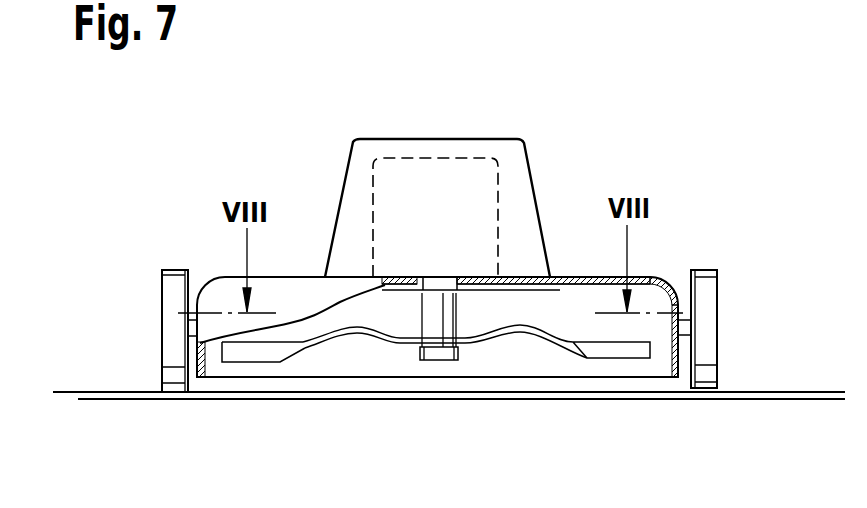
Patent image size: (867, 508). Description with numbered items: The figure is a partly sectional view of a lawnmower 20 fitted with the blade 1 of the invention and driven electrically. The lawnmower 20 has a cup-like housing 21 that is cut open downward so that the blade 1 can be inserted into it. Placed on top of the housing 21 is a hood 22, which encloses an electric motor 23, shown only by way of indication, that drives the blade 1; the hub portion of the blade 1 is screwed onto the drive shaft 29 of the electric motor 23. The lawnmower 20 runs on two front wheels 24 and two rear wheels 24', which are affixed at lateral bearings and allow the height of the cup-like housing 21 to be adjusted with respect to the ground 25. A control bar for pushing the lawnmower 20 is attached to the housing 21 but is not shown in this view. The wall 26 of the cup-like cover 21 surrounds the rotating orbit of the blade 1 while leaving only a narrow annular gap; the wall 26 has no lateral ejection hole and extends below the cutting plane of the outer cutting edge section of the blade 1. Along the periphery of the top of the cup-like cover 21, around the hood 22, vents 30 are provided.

The blade 1 is at (356, 352).
The lawnmower 20 is at (580, 102).
The housing 21 is at (660, 268).
The hood 22 is at (346, 158).
The electric motor 23 is at (500, 177).
The front wheels 24 is at (727, 291).
The rear wheels 24' is at (148, 298).
The ground 25 is at (90, 390).
The wall 26 is at (672, 347).
The drive shaft 29 is at (447, 312).
The vents 30 is at (574, 276).